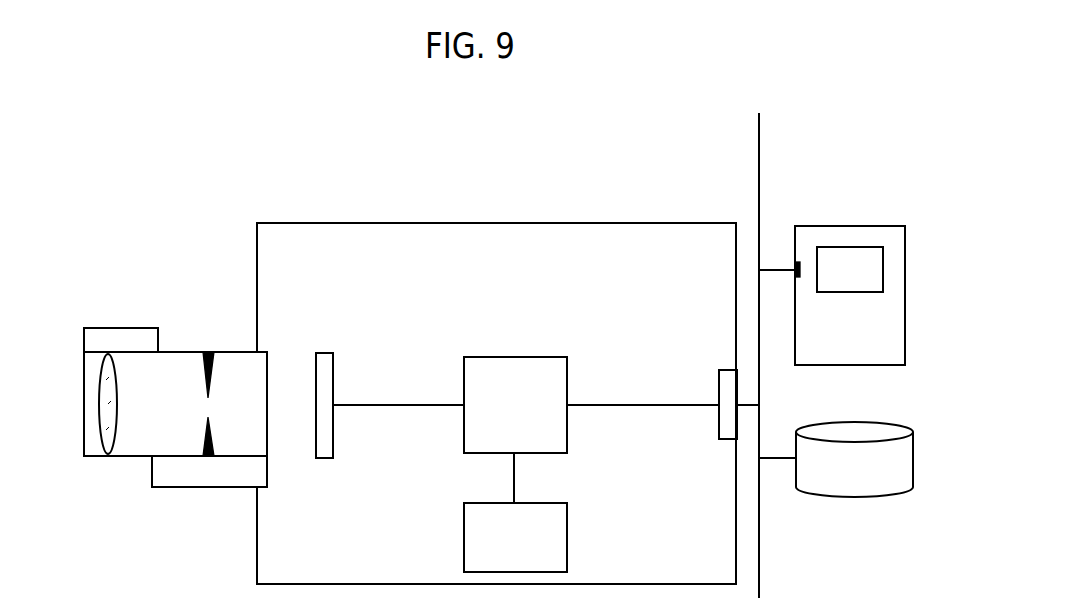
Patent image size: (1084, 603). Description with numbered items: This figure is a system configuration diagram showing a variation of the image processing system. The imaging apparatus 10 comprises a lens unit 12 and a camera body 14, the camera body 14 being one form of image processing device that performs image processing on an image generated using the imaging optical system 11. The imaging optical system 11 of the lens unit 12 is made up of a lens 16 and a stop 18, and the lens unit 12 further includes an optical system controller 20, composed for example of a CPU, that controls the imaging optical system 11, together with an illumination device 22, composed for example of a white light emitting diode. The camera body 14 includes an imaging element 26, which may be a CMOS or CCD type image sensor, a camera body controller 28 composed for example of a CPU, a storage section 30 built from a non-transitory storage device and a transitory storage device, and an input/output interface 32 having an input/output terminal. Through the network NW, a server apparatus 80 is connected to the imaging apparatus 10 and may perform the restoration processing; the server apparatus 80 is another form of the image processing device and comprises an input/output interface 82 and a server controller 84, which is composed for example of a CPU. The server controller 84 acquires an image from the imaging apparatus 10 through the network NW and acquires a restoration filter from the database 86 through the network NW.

The imaging apparatus 10 is at (500, 148).
The imaging optical system 11 is at (191, 352).
The lens unit 12 is at (155, 379).
The camera body 14 is at (497, 223).
The lens 16 is at (100, 404).
The stop 18 is at (205, 376).
The optical system controller 20 is at (208, 488).
The illumination device 22 is at (122, 328).
The imaging element 26 is at (334, 377).
The camera body controller 28 is at (516, 357).
The storage section 30 is at (568, 534).
The input/output interface 32 is at (719, 385).
The network NW is at (760, 137).
The server apparatus 80 is at (869, 257).
The input/output interface 82 is at (802, 275).
The server controller 84 is at (884, 270).
The database 86 is at (914, 460).